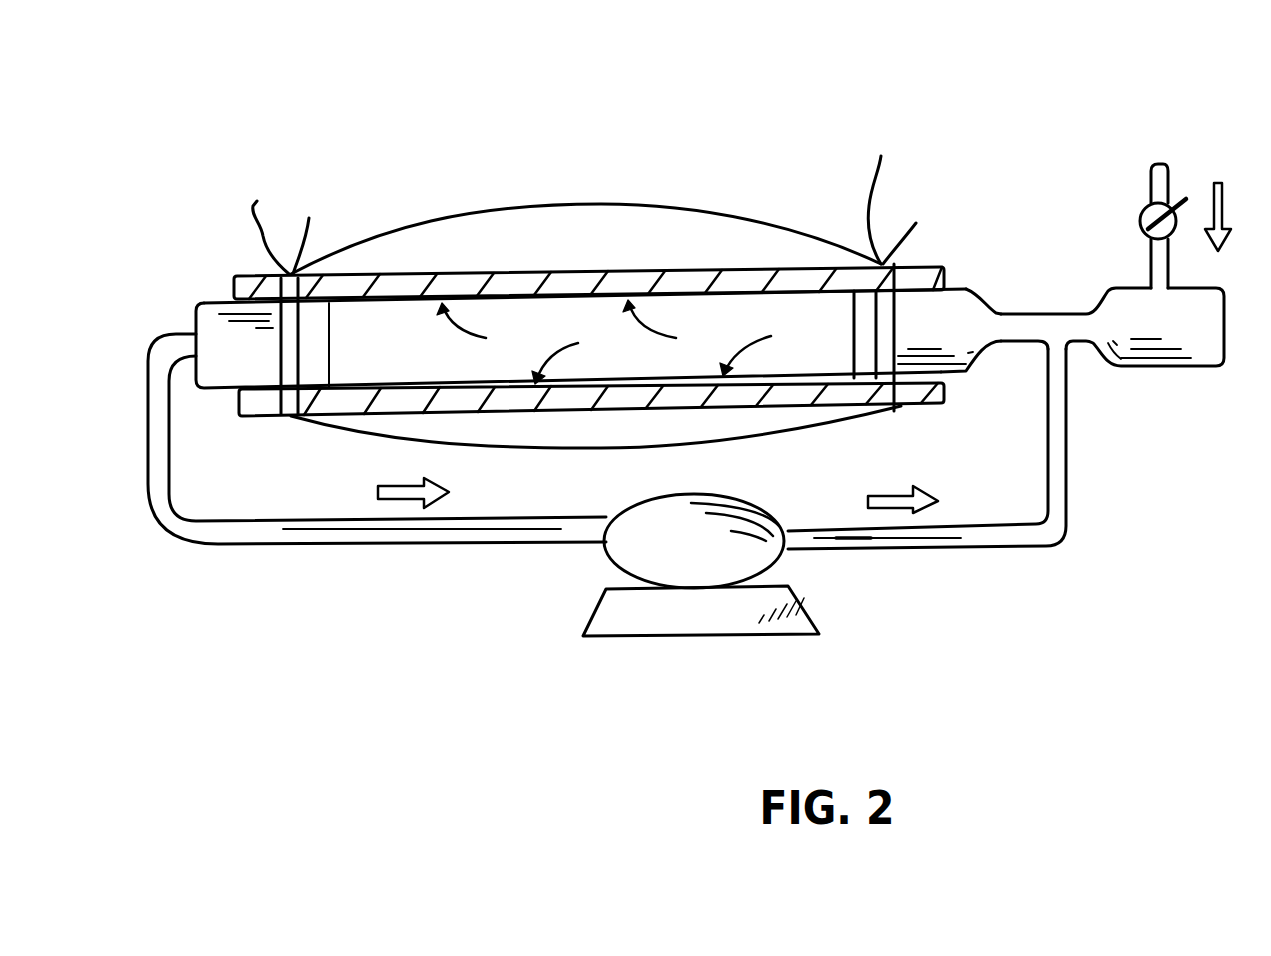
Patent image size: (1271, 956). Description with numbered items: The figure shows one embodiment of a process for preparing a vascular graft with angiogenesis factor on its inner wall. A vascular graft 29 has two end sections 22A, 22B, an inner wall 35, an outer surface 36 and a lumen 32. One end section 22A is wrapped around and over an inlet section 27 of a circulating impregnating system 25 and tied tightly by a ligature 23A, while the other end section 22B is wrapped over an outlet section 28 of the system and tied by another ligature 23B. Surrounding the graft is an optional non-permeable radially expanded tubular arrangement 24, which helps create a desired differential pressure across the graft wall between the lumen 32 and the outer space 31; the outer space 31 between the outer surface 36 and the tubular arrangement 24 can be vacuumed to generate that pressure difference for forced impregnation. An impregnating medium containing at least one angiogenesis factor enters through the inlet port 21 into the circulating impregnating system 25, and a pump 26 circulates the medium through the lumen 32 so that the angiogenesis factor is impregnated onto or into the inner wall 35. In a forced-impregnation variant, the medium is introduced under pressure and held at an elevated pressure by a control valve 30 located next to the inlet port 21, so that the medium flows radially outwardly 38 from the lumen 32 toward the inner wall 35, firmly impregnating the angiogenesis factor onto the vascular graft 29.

The inlet port 21 is at (1172, 157).
The end section 22A is at (937, 257).
The end section 22B is at (240, 425).
The ligature 23A is at (882, 167).
The ligature 23B is at (258, 217).
The non-permeable radially expanded tubular arrangement 24 is at (636, 190).
The circulating impregnating system 25 is at (403, 570).
The pump 26 is at (600, 565).
The inlet section 27 is at (973, 307).
The outlet section 28 is at (212, 327).
The vascular graft 29 is at (530, 250).
The control valve 30 is at (1137, 207).
The outer space 31 is at (448, 225).
The lumen 32 is at (358, 315).
The inner wall 35 is at (748, 297).
The outer surface 36 is at (643, 262).
The radially outward flow 38 is at (758, 352).